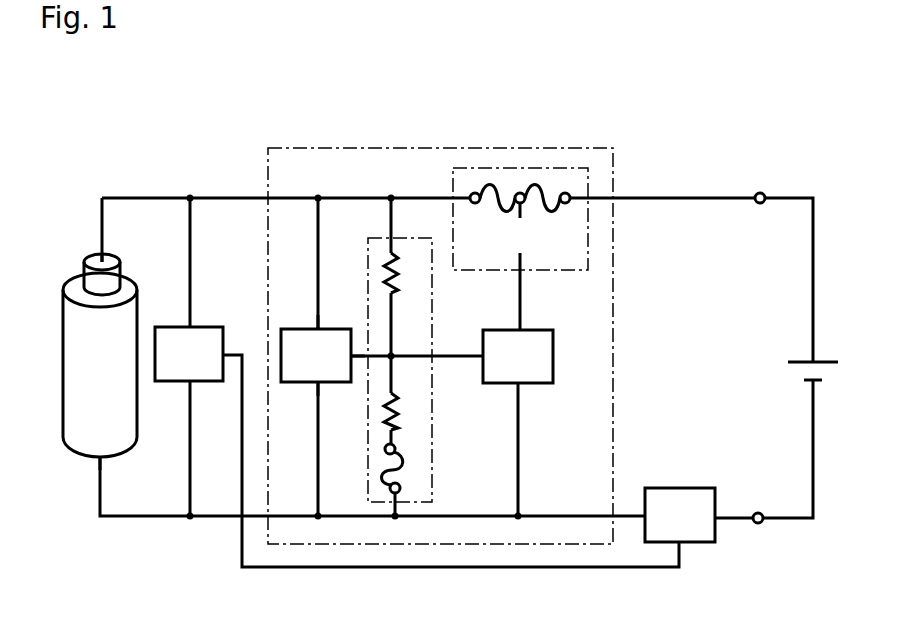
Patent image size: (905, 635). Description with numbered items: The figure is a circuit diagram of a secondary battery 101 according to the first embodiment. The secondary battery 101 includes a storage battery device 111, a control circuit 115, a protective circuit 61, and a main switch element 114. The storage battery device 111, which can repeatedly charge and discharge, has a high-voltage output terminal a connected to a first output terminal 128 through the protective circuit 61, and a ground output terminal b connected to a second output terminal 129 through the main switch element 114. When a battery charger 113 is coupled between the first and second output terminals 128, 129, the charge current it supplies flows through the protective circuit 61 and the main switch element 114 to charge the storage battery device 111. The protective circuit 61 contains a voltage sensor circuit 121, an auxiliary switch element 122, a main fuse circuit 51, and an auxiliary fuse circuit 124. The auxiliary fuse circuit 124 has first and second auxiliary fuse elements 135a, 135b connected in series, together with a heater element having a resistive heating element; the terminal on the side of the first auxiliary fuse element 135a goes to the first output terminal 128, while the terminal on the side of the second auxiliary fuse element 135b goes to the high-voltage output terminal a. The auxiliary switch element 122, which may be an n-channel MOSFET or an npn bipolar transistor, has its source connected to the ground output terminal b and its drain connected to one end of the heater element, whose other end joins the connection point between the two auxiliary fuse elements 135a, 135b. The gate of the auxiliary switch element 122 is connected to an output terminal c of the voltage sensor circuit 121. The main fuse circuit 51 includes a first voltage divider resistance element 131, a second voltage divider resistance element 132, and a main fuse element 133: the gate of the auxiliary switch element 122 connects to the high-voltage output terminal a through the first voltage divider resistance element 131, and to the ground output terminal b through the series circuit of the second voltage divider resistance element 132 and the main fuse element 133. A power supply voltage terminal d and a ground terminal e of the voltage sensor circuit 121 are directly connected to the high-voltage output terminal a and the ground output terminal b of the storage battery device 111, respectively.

The secondary battery 101 is at (166, 114).
The storage battery device 111 is at (68, 283).
The high-voltage output terminal a is at (104, 262).
The ground output terminal b is at (100, 458).
The control circuit 115 is at (165, 383).
The protective circuit 61 is at (390, 148).
The voltage sensor circuit 121 is at (300, 328).
The output terminal c is at (352, 365).
The power supply voltage terminal d is at (341, 329).
The ground terminal e is at (313, 383).
The first voltage divider resistance element 131 is at (392, 265).
The main fuse circuit 51 is at (432, 385).
The second voltage divider resistance element 132 is at (402, 418).
The main fuse element 133 is at (405, 473).
The auxiliary switch element 122 is at (555, 350).
The auxiliary fuse circuit 124 is at (590, 182).
The first auxiliary fuse element 135a is at (676, 342).
The second auxiliary fuse element 135b is at (483, 183).
The first output terminal 128 is at (760, 193).
The second output terminal 129 is at (760, 523).
The battery charger 113 is at (790, 358).
The main switch element 114 is at (680, 486).